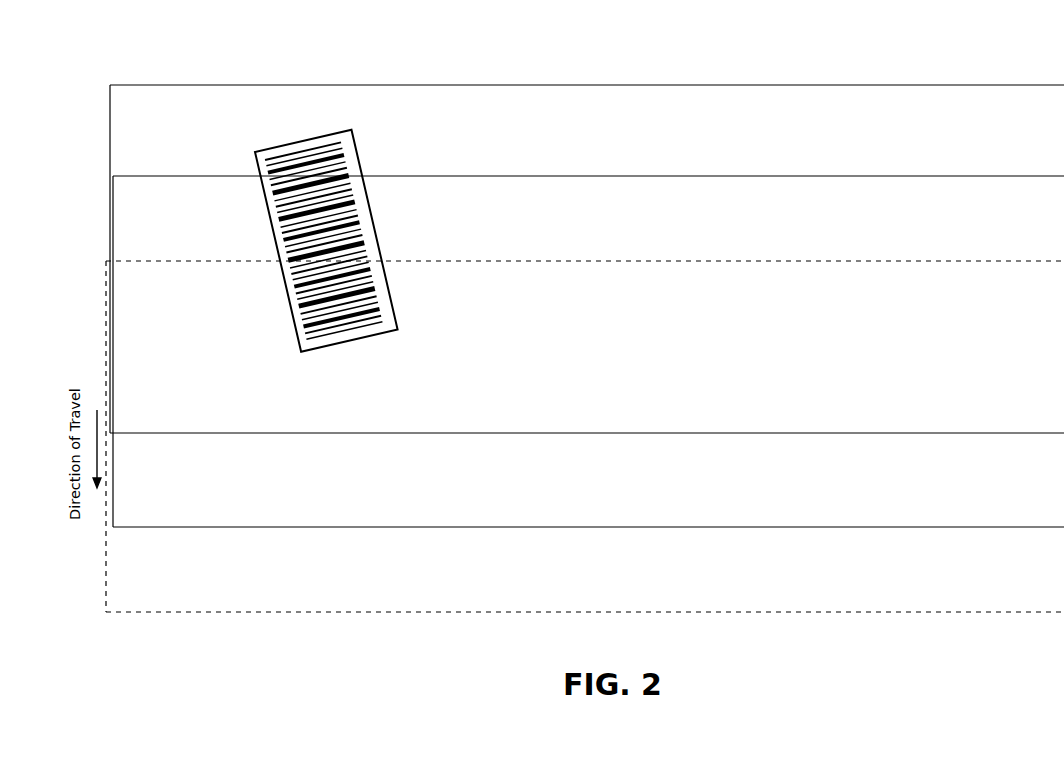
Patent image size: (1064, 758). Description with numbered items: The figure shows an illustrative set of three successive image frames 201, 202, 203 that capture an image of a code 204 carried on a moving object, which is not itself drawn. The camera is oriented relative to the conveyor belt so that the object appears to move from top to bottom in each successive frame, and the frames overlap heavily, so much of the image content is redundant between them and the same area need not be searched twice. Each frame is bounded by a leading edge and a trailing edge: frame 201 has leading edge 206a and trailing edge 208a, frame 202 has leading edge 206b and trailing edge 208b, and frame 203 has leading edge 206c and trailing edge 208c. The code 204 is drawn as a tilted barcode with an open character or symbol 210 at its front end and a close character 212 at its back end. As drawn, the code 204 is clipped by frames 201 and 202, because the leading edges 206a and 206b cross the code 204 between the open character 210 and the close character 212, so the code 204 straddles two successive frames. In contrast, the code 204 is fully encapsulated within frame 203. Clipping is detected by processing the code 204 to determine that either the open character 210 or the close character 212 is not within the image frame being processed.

The image frame 201 is at (690, 260).
The image frame 202 is at (686, 175).
The image frame 203 is at (692, 85).
The code 204 is at (397, 320).
The leading edge 206a is at (908, 261).
The leading edge 206b is at (908, 176).
The leading edge 206c is at (908, 85).
The trailing edge 208a is at (908, 612).
The trailing edge 208b is at (908, 527).
The trailing edge 208c is at (908, 433).
The open character 210 is at (303, 347).
The close character 212 is at (262, 170).